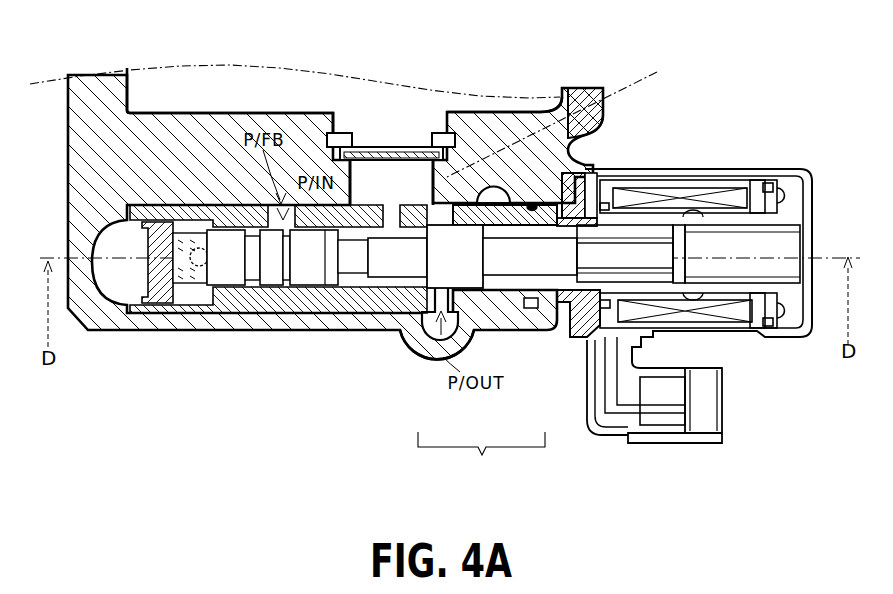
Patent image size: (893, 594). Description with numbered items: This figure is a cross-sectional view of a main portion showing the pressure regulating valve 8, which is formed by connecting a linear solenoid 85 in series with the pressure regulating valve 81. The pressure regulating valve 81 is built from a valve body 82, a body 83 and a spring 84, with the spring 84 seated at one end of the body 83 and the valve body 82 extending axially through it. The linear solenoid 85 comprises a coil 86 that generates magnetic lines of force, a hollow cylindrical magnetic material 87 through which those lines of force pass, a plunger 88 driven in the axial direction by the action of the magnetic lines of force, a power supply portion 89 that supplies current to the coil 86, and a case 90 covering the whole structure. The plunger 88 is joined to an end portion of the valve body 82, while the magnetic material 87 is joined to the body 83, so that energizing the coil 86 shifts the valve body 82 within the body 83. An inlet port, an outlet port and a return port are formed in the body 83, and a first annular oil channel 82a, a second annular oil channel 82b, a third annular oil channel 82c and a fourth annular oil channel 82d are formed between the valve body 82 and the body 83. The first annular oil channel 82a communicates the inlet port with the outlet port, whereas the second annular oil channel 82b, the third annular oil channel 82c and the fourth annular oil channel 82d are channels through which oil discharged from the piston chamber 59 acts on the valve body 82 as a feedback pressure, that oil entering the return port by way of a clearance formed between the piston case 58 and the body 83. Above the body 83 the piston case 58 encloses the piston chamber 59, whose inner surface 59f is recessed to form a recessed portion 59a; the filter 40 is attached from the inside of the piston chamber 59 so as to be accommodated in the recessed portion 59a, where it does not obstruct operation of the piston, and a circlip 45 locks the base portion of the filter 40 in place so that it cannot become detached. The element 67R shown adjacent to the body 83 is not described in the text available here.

The pressure regulating valve 8 is at (481, 459).
The filter 40 is at (413, 132).
The circlip 45 is at (342, 133).
The piston case 58 is at (113, 120).
The piston chamber 59 is at (302, 90).
The recessed portion 59a is at (468, 110).
The inner surface 59f is at (219, 110).
The retainer 67R is at (585, 95).
The pressure regulating valve 81 is at (394, 396).
The valve body 82 is at (440, 308).
The first annular oil channel 82a is at (410, 290).
The second annular oil channel 82b is at (335, 283).
The third annular oil channel 82c is at (300, 290).
The fourth annular oil channel 82d is at (248, 287).
The body 83 is at (313, 315).
The spring 84 is at (187, 305).
The linear solenoid 85 is at (660, 237).
The coil 86 is at (720, 192).
The magnetic material 87 is at (743, 216).
The plunger 88 is at (623, 250).
The power supply portion 89 is at (722, 387).
The case 90 is at (723, 168).